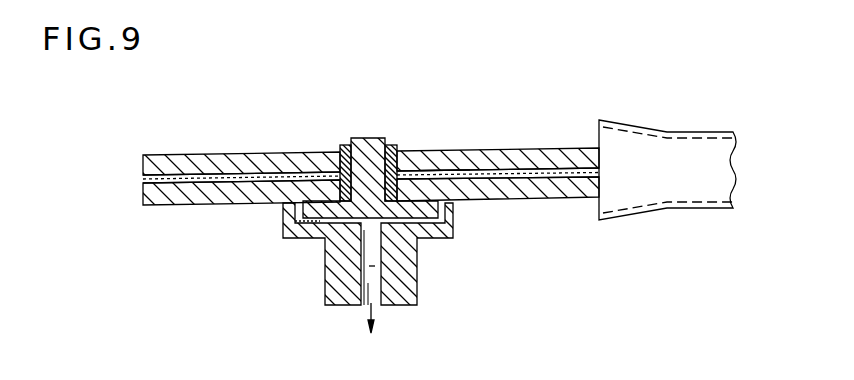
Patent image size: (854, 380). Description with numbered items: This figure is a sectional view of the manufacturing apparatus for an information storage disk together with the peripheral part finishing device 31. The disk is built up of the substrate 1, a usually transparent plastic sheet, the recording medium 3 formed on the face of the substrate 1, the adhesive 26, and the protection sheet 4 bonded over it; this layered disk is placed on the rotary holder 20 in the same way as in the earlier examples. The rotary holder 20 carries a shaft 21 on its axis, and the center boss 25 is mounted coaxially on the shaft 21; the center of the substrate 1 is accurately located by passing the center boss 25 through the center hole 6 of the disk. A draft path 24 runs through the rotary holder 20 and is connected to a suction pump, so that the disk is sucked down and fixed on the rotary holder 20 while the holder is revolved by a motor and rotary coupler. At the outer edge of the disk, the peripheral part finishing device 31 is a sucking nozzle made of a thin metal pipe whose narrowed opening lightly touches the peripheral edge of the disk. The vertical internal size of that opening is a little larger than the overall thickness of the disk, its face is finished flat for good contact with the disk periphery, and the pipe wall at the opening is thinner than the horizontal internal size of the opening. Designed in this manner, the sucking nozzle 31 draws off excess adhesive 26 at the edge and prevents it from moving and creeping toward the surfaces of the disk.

The substrate 1 is at (189, 204).
The protection sheet 4 is at (192, 165).
The recording medium film 3 is at (517, 179).
The adhesive 26 is at (441, 172).
The center hole 6 is at (347, 143).
The center boss 25 is at (392, 143).
The shaft 21 is at (364, 137).
The rotary holder 20 is at (336, 300).
The draft path 24 is at (392, 300).
The peripheral part finishing device 31 is at (636, 146).